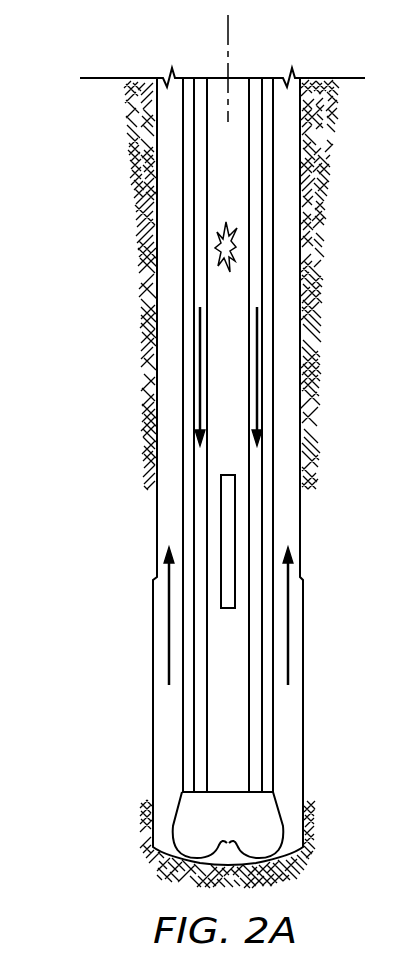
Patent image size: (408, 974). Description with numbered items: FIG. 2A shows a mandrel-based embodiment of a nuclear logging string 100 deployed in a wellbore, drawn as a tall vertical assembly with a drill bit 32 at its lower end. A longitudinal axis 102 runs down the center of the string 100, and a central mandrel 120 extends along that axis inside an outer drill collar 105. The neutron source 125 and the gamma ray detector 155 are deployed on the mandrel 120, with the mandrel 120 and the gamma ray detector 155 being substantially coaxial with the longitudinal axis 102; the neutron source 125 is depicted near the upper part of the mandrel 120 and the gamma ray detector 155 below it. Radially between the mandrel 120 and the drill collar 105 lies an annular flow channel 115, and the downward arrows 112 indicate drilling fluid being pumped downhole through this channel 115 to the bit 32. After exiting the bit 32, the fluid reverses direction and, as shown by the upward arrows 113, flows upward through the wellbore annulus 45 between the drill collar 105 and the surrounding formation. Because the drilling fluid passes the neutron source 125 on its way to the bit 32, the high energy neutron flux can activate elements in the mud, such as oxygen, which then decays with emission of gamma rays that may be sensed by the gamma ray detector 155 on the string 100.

The nuclear logging string 100 is at (107, 186).
The longitudinal axis 102 is at (227, 45).
The wellbore annulus 45 is at (290, 235).
The drill collar 105 is at (183, 718).
The central mandrel 120 is at (233, 165).
The neutron source 125 is at (222, 249).
The downhole flow of drilling fluid 112 is at (258, 387).
The gamma ray detector 155 is at (228, 528).
The annular flow channel 115 is at (200, 618).
The upward flow of drilling fluid 113 is at (288, 620).
The bit 32 is at (244, 832).